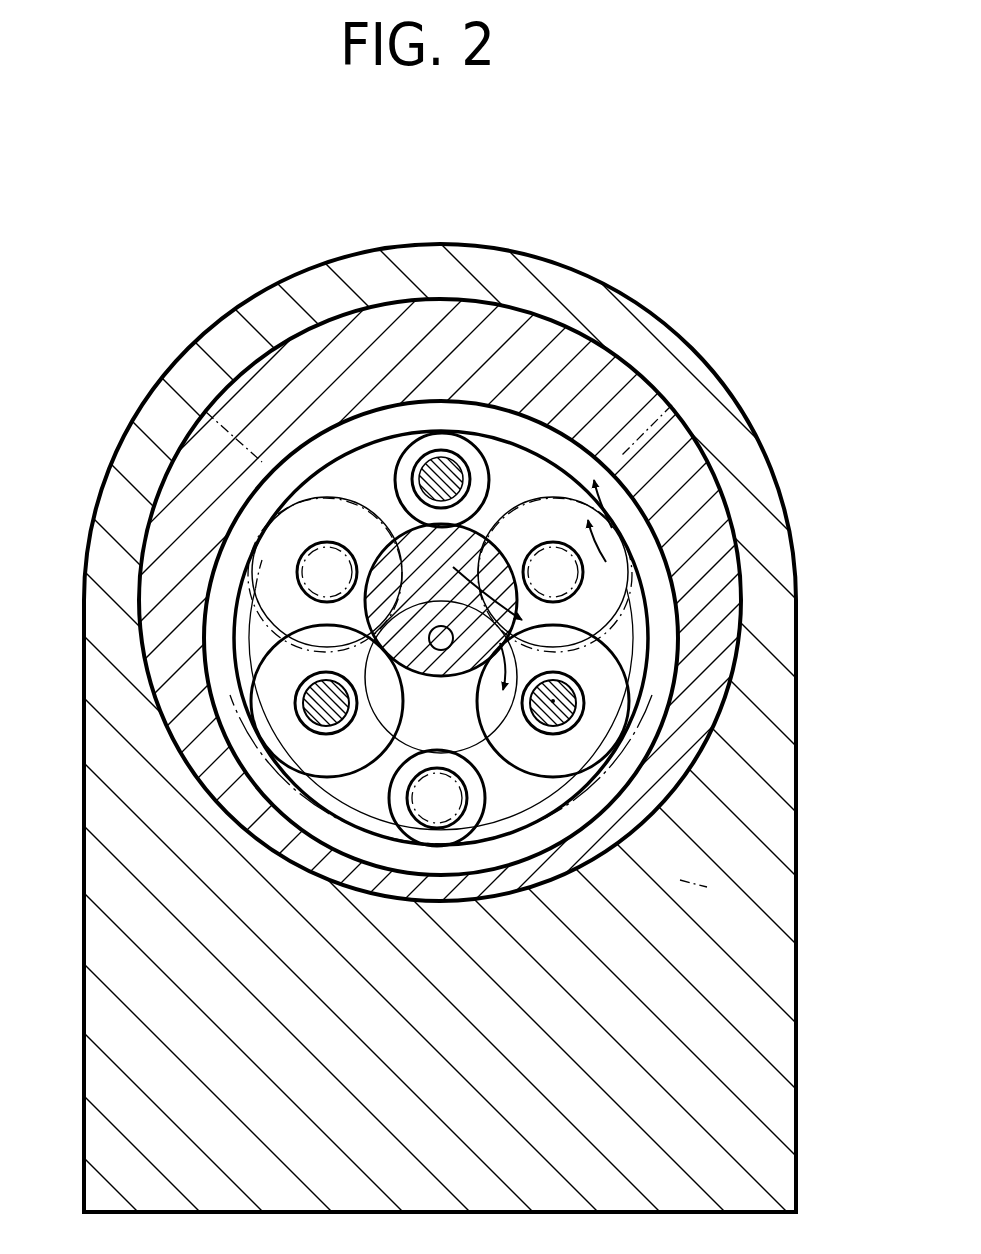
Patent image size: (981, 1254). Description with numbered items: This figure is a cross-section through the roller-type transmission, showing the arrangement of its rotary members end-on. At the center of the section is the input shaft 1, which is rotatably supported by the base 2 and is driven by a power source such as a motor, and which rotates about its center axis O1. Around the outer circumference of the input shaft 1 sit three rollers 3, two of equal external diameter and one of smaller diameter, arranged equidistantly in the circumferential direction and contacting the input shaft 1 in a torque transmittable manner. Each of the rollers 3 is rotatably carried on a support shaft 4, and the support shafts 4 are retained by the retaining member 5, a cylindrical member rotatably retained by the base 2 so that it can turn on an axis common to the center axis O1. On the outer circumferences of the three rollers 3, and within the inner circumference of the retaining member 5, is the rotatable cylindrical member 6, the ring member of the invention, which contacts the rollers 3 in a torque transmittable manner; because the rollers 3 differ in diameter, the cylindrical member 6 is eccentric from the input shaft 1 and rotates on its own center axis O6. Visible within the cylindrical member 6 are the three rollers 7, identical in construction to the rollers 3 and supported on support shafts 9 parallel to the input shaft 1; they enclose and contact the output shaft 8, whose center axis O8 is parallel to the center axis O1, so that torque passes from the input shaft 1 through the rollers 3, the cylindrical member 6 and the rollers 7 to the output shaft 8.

The input shaft 1 is at (350, 448).
The base 2 is at (102, 932).
The rollers 3 is at (465, 452).
The support shafts 4 is at (433, 433).
The retaining member 5 is at (545, 365).
The cylindrical member 6 is at (657, 607).
The rollers 7 is at (206, 412).
The output shaft 8 is at (473, 740).
The support shafts 9 is at (327, 572).
The center axis of the input shaft O1 is at (441, 598).
The center axis of the cylindrical member O6 is at (441, 638).
The center axis of the output shaft O8 is at (553, 703).